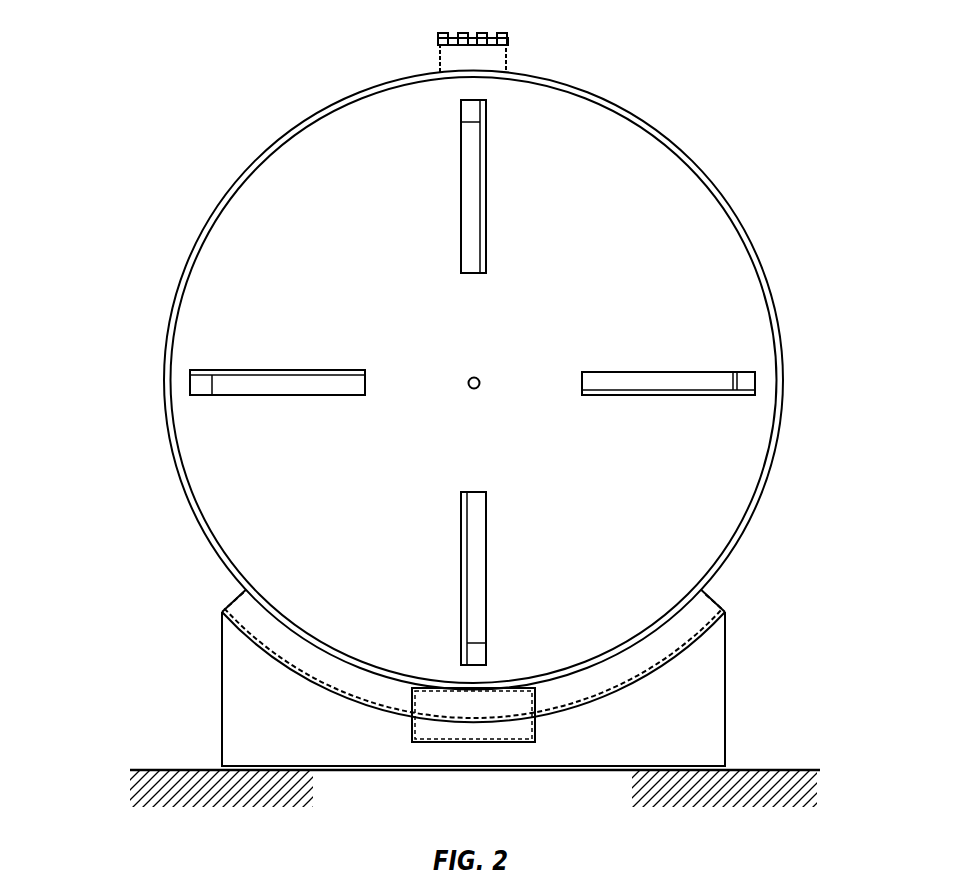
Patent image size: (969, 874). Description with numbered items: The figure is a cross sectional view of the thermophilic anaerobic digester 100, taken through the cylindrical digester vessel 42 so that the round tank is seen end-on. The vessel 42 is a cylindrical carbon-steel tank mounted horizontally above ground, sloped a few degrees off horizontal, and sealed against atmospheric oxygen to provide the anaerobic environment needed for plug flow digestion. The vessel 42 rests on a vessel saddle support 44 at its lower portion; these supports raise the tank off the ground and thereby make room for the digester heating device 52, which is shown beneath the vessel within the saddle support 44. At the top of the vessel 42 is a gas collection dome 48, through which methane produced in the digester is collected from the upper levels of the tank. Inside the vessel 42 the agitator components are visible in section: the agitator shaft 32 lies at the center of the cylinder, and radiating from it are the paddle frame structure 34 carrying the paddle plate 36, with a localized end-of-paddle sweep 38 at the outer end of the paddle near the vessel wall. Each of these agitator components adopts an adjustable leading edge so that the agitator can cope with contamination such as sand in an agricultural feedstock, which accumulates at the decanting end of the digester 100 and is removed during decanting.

The thermophilic anaerobic digester 100 is at (157, 74).
The agitator shaft 32 is at (478, 377).
The paddle frame structure 34 is at (670, 371).
The paddle plate 36 is at (757, 382).
The localized end-of-paddle sweep 38 is at (733, 396).
The digester vessel 42 is at (777, 303).
The vessel saddle support 44 is at (726, 735).
The gas collection dome 48 is at (505, 38).
The digester heating device 52 is at (535, 733).